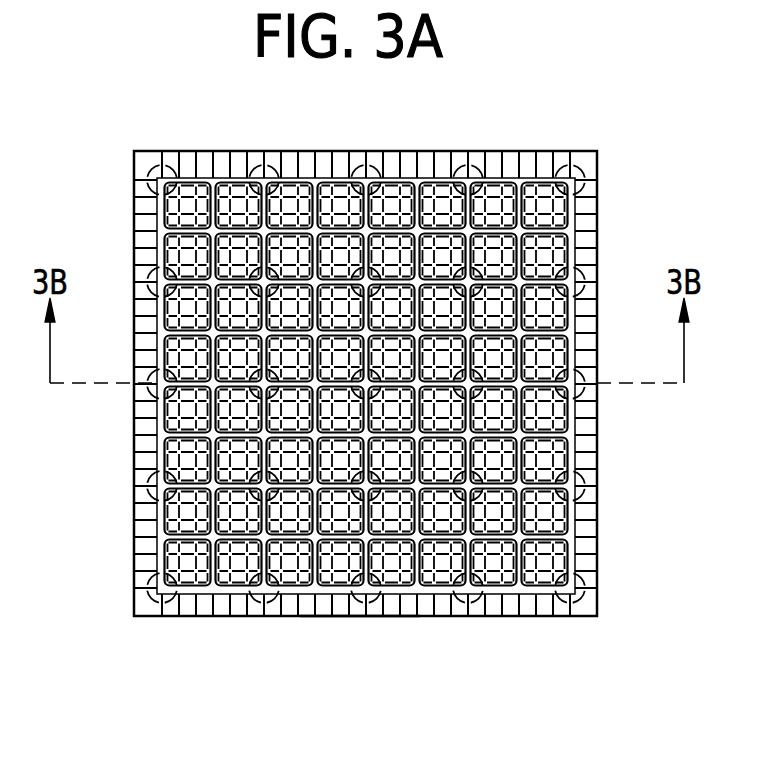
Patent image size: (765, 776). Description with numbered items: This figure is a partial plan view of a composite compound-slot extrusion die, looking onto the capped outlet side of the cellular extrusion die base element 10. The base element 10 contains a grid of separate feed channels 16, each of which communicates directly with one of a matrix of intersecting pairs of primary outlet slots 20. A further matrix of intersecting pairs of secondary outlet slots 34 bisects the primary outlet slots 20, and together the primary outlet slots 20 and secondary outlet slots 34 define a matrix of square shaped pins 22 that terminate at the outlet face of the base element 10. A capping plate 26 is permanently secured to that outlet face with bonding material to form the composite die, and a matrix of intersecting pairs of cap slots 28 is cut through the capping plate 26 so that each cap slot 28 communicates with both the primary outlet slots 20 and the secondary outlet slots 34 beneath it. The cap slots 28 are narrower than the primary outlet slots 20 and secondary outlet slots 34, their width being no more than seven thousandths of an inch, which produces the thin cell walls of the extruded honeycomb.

The extrusion die base element 10 is at (122, 505).
The feed channels 16 is at (251, 614).
The primary outlet slots 20 is at (315, 615).
The pins 22 is at (534, 193).
The capping plate 26 is at (152, 215).
The cap slots 28 is at (553, 282).
The secondary outlet slots 34 is at (212, 614).